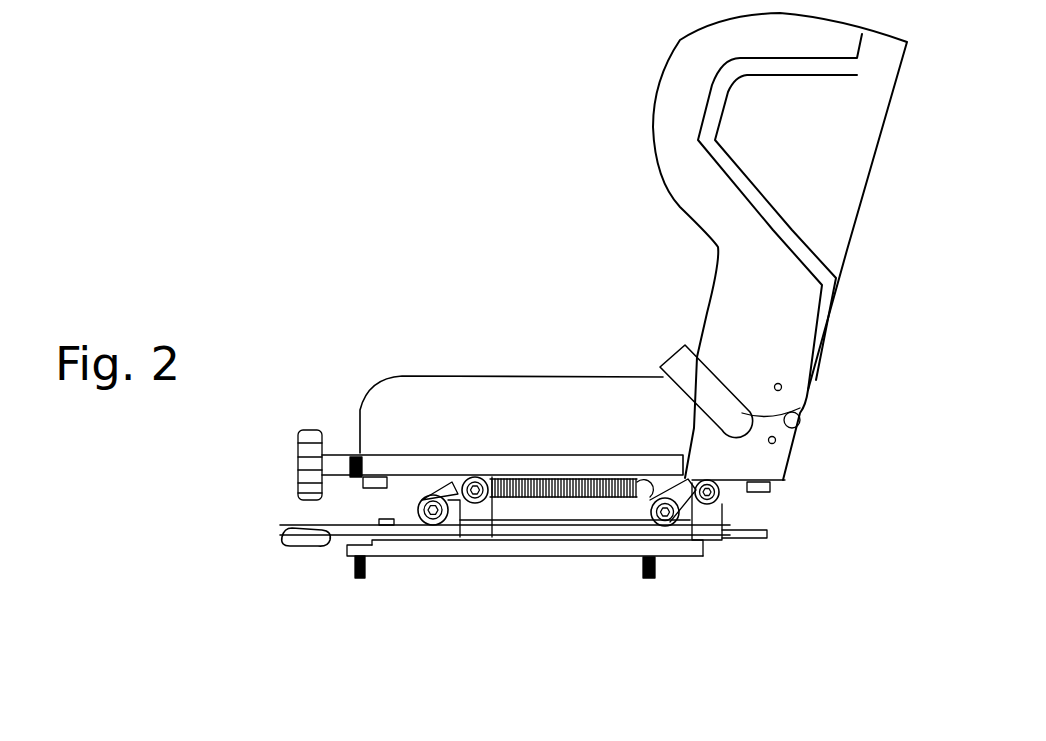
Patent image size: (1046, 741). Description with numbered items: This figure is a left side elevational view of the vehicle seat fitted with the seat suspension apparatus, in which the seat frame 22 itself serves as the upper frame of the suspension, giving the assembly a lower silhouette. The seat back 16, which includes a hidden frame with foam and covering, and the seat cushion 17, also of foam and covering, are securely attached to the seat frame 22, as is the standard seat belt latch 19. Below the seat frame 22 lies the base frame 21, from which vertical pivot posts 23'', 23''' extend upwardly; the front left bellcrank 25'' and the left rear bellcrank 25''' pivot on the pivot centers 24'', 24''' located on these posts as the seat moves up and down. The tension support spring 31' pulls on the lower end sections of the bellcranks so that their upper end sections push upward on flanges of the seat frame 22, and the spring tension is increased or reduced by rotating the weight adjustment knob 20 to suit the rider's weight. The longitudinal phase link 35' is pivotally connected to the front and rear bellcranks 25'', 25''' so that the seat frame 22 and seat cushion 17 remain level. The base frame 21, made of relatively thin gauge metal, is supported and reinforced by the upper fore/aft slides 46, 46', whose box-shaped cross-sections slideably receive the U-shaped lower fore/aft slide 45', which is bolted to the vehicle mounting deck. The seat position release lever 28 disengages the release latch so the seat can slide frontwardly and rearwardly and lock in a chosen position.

The seat back 16 is at (640, 125).
The upper fore/aft slide 46 is at (700, 7).
The seat cushion 17 is at (475, 403).
The seat frame 22 is at (437, 470).
The tension support spring 31' is at (571, 398).
The seat belt latch 19 is at (688, 372).
The weight adjustment knob 20 is at (298, 456).
The bellcrank 25'' is at (334, 504).
The bellcrank pivot center 24'' is at (496, 547).
The vertical pivot post 23'' is at (454, 563).
The bellcrank 25''' is at (660, 570).
The bellcrank pivot center 24''' is at (785, 503).
The vertical pivot post 23''' is at (715, 559).
The phase link 35' is at (505, 579).
The base frame 21 is at (753, 537).
The upper fore/aft slide 46' is at (528, 601).
The lower fore/aft slide 45' is at (497, 603).
The seat position release lever 28 is at (307, 535).